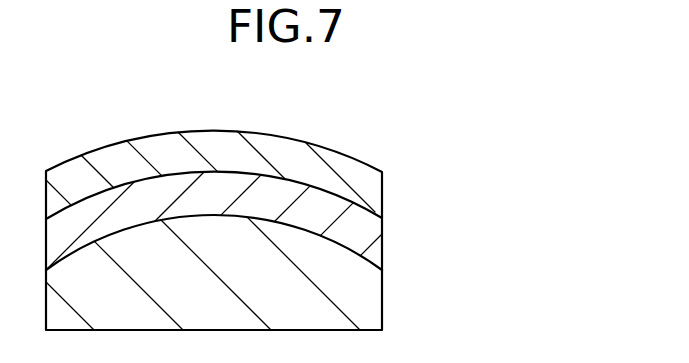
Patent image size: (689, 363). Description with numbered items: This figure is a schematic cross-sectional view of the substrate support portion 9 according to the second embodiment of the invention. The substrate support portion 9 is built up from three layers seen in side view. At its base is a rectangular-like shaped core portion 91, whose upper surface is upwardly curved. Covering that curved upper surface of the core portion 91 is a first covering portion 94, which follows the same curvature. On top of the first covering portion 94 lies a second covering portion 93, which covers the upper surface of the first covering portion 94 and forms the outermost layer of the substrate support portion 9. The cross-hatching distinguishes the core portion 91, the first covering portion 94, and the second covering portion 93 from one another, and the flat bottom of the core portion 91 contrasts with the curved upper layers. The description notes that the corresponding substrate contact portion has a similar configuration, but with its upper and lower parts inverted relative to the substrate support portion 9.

The substrate support portion 9 is at (284, 209).
The second covering portion 93 is at (367, 192).
The first covering portion 94 is at (370, 244).
The core portion 91 is at (367, 303).